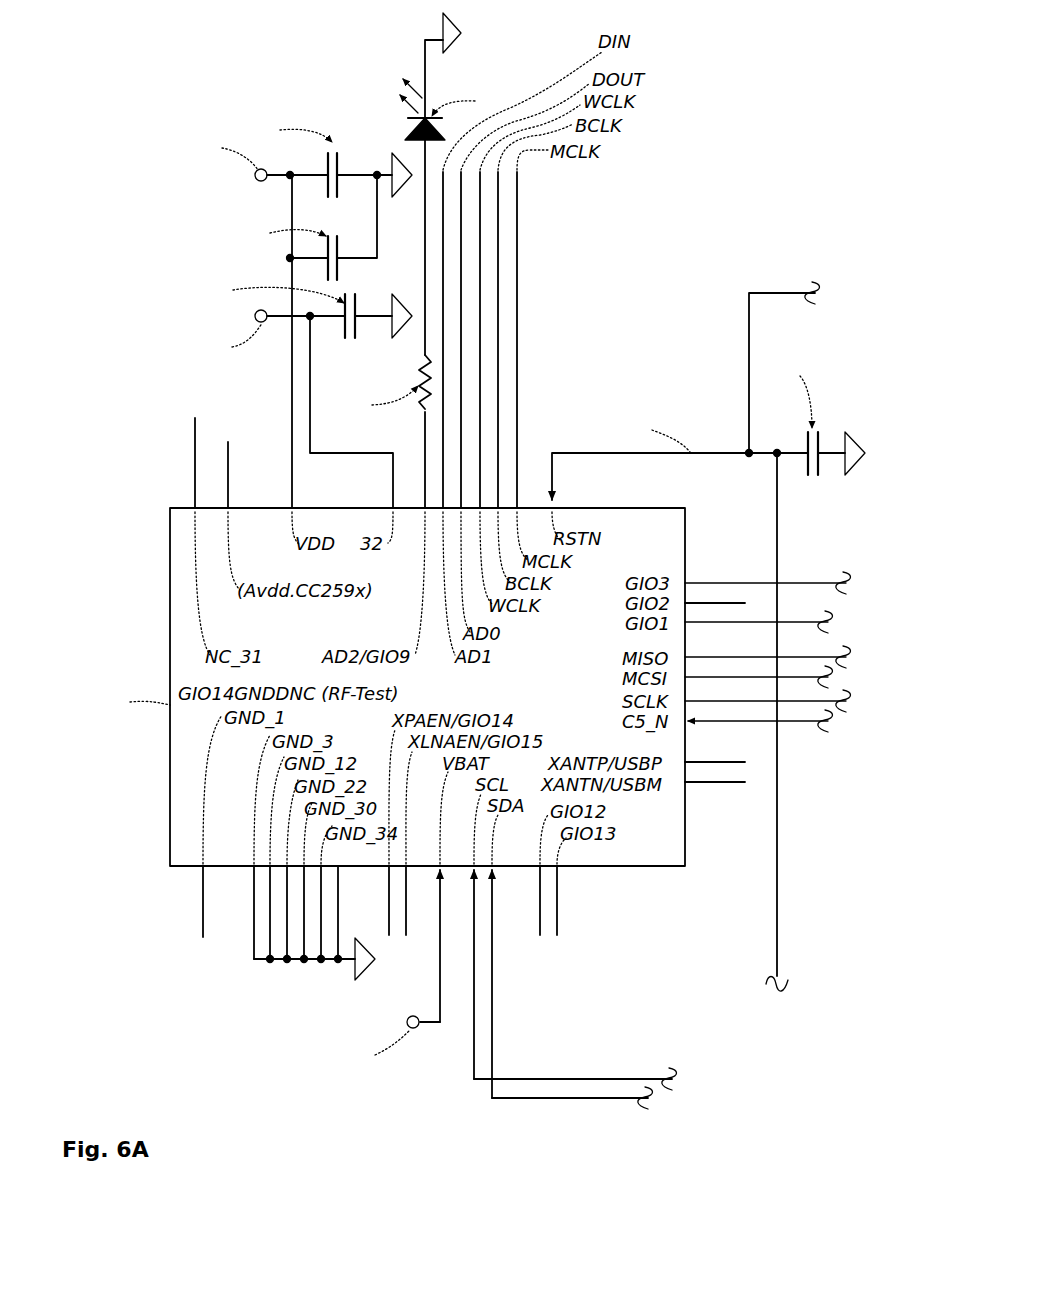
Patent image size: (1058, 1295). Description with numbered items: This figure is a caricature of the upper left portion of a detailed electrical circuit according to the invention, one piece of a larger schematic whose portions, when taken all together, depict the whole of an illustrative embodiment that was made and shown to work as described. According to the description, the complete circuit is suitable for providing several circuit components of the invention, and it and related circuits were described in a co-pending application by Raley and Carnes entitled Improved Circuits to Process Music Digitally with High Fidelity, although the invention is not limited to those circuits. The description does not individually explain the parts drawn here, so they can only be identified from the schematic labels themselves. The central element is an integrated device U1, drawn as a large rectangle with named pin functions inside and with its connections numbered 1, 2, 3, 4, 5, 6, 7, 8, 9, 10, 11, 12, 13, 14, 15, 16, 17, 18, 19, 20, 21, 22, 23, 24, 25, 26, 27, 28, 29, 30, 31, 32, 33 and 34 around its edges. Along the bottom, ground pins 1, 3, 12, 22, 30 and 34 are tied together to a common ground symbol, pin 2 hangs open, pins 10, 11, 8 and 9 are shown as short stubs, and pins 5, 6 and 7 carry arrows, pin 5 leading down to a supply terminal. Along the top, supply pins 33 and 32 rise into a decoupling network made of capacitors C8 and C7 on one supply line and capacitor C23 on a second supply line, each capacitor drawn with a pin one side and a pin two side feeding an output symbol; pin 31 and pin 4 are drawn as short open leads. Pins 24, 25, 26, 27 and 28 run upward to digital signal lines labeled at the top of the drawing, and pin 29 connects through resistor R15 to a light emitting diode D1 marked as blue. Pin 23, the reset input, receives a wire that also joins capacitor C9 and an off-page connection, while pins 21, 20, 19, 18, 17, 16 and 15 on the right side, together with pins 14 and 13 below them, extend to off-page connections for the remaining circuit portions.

The GND_1 pin of U1 1 is at (254, 884).
The GIO14GNDDNC (RF-Test) pin of U1 2 is at (202, 940).
The GND_3 pin of U1 3 is at (270, 888).
The Avdd.CC259x pin of U1 4 is at (228, 462).
The VBAT pin of U1 5 is at (440, 880).
The SDA pin of U1 6 is at (474, 890).
The SCL pin of U1 7 is at (482, 880).
The GIO13 pin of U1 8 is at (540, 882).
The GIO12 pin of U1 9 is at (557, 878).
The XLNAEN/GIO15 pin of U1 10 is at (406, 880).
The XPAEN/GIO14 pin of U1 11 is at (389, 880).
The GND_12 pin of U1 12 is at (287, 895).
The XANTN/USBM pin of U1 13 is at (727, 783).
The XANTP/USBP pin of U1 14 is at (727, 763).
The C5_N pin of U1 15 is at (745, 719).
The SCLK pin of U1 16 is at (727, 699).
The MCSI pin of U1 17 is at (695, 675).
The MISO pin of U1 18 is at (712, 655).
The GIO1 pin of U1 19 is at (725, 620).
The circuit component 20 is at (727, 604).
The GIO3 pin of U1 21 is at (740, 581).
The GND_22 pin of U1 22 is at (304, 875).
The RSTN pin of U1 23 is at (552, 480).
The MCLK pin of U1 24 is at (517, 305).
The BCLK pin of U1 25 is at (498, 332).
The WCLK pin of U1 26 is at (480, 370).
The AD0 pin of U1 27 is at (461, 410).
The AD1 pin of U1 28 is at (443, 467).
The AD2/GIO9 pin of U1 29 is at (425, 503).
The circuit component 30 is at (321, 876).
The NC_31 pin of U1 31 is at (195, 432).
The pin 32 of U1 32 is at (393, 492).
The VDD pin of U1 33 is at (292, 490).
The GND_34 pin of U1 34 is at (338, 874).
The integrated circuit A8520E24A91 U1 is at (354, 687).
The capacitor 4.7uF C7 is at (272, 228).
The capacitor 4.7uF C8 is at (295, 135).
The capacitor 0.01uF C9 is at (813, 380).
The capacitor 0.1uF C23 is at (270, 322).
The blue LED D1 is at (462, 184).
The resistor 1.5K R15 is at (383, 419).